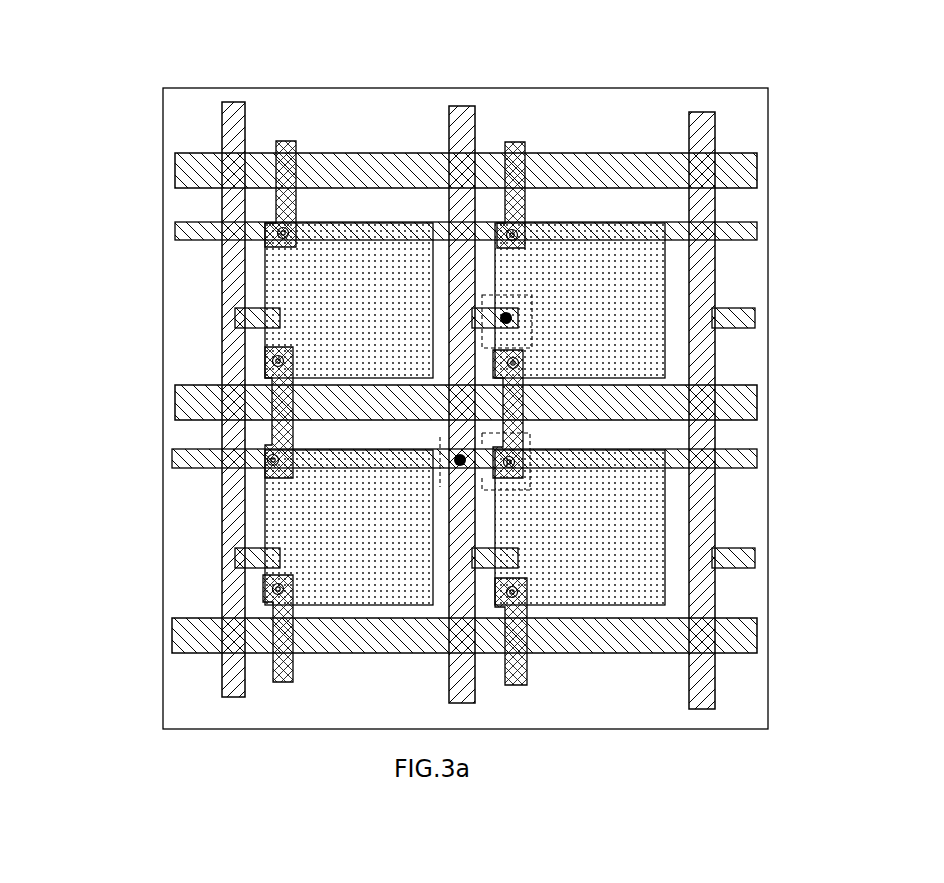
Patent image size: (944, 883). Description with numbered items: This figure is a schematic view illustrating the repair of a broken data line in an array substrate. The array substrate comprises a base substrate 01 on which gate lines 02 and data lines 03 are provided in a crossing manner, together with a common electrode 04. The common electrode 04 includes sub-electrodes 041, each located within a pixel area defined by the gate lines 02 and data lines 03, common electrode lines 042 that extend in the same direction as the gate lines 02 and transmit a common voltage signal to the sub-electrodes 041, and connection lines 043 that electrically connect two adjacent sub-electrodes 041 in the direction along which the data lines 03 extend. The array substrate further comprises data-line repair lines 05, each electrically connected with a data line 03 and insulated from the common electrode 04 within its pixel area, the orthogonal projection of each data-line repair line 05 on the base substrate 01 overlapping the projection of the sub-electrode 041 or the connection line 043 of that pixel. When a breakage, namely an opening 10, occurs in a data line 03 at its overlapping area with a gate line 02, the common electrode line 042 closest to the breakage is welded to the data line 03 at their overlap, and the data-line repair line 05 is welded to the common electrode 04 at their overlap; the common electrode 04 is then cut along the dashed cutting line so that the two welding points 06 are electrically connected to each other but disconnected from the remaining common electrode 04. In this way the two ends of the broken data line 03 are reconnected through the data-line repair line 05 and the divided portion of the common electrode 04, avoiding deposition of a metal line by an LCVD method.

The base substrate 01 is at (457, 88).
The gate line 02 is at (758, 157).
The data line 03 is at (236, 140).
The common electrode 04 is at (429, 361).
The sub-electrode 041 is at (285, 285).
The common electrode line 042 is at (278, 232).
The connection line 043 is at (275, 433).
The data-line repair line 05 is at (755, 308).
The welding point 06 is at (506, 318).
The opening 10 is at (462, 405).